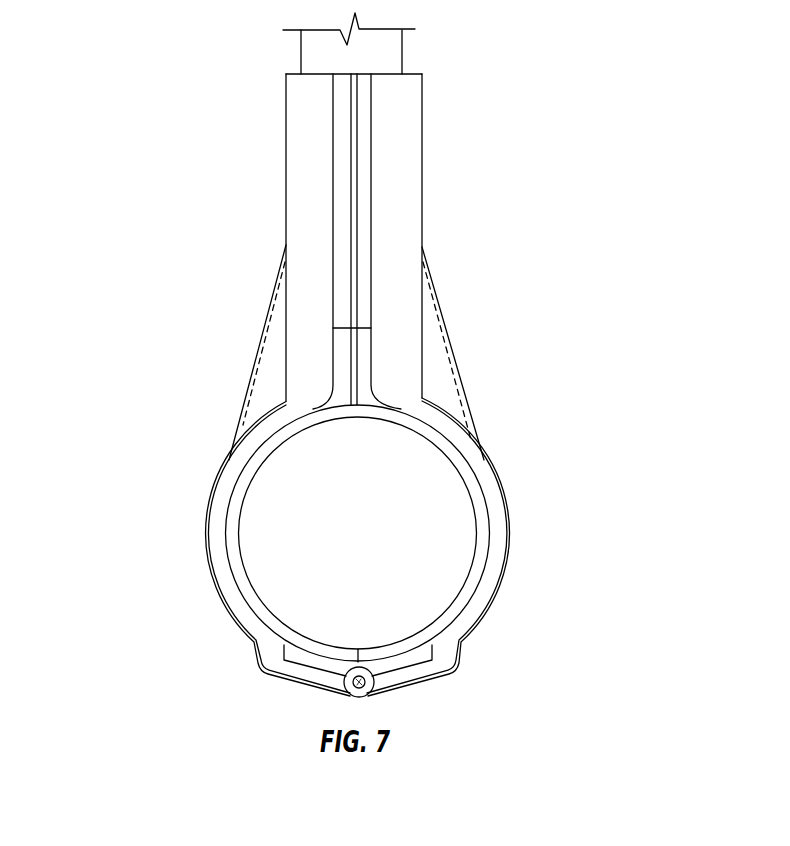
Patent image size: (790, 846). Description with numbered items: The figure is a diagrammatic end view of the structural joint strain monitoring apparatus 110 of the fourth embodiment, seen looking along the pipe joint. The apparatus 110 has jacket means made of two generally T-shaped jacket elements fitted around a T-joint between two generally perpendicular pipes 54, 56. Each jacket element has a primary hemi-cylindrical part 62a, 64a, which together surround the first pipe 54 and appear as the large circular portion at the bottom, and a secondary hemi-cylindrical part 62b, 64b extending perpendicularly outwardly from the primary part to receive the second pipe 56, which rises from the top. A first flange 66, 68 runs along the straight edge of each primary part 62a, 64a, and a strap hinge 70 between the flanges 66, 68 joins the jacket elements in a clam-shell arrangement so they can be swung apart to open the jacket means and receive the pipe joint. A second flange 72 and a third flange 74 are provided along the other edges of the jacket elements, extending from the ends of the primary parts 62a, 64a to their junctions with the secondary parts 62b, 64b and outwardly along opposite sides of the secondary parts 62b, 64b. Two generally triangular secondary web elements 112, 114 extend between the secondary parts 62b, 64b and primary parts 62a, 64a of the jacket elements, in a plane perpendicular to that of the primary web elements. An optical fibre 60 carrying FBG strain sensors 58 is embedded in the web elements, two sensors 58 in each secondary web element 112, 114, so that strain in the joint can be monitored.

The first pipe 54 is at (473, 492).
The second pipe 56 is at (393, 69).
The FBG strain sensor 58 is at (273, 312).
The optical fibre 60 is at (400, 148).
The primary hemi-cylindrical part 62a is at (227, 485).
The secondary hemi-cylindrical part 62b is at (317, 182).
The primary hemi-cylindrical part 64a is at (473, 607).
The secondary hemi-cylindrical part 64b is at (400, 185).
The first flange 66 is at (282, 664).
The first flange 68 is at (435, 673).
The strap hinge 70 is at (366, 684).
The second flange 72 is at (340, 363).
The third flange 74 is at (334, 125).
The structural joint strain monitoring apparatus 110 is at (531, 90).
The secondary web element 112 is at (270, 403).
The secondary web element 114 is at (465, 381).